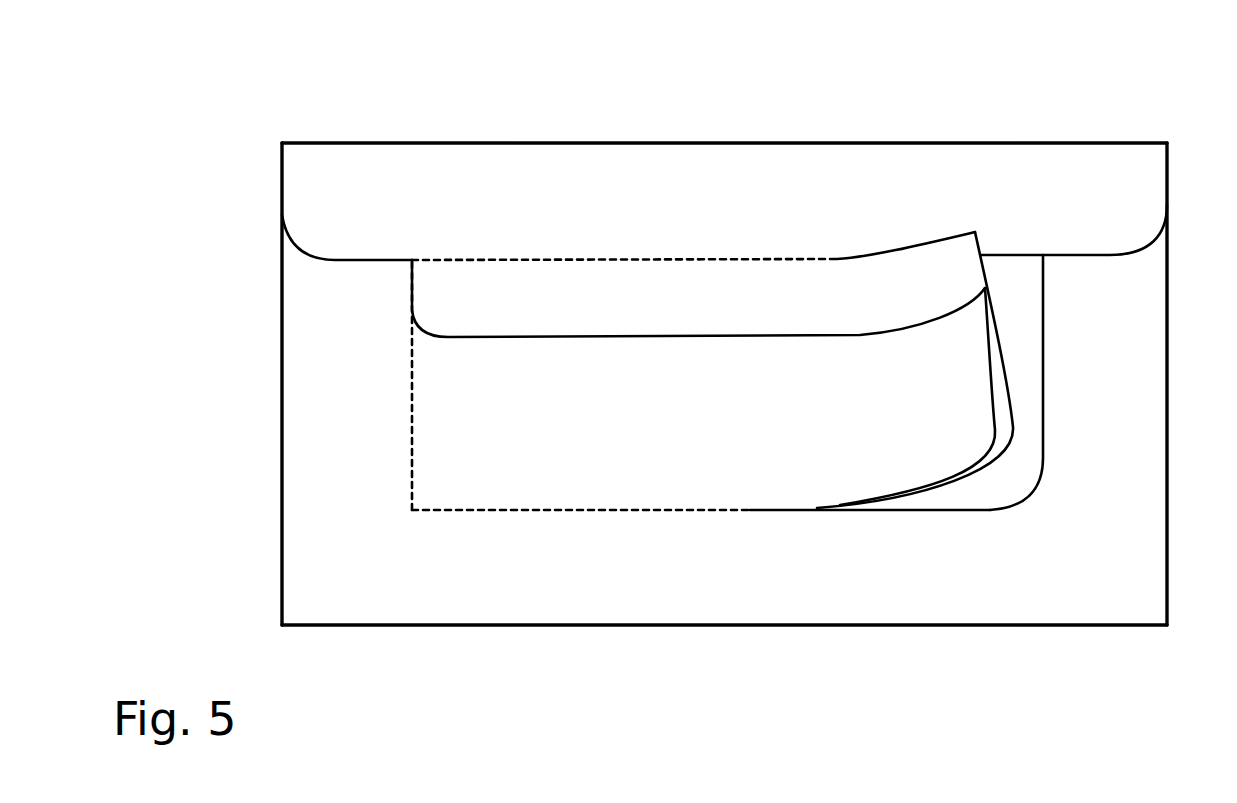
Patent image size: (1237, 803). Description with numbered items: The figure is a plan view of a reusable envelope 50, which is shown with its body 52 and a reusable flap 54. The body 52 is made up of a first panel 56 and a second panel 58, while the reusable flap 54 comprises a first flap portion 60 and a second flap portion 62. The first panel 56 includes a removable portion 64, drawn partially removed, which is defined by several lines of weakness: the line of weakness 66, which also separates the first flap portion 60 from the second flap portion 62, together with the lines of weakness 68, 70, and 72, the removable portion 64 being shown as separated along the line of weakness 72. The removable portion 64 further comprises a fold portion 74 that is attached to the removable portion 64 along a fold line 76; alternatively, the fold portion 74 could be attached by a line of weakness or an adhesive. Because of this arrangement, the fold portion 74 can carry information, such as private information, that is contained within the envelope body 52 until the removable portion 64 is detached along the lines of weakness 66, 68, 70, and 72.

The reusable envelope 50 is at (862, 101).
The body 52 is at (1132, 384).
The reusable flap 54 is at (421, 190).
The first panel 56 is at (320, 535).
The second panel 58 is at (400, 628).
The first flap portion 60 is at (724, 224).
The second flap portion 62 is at (703, 382).
The removable portion 64 is at (819, 458).
The line of weakness 66 is at (688, 258).
The line of weakness 68 is at (412, 382).
The line of weakness 70 is at (672, 510).
The line of weakness 72 is at (1045, 458).
The fold portion 74 is at (1001, 377).
The fold line 76 is at (940, 238).